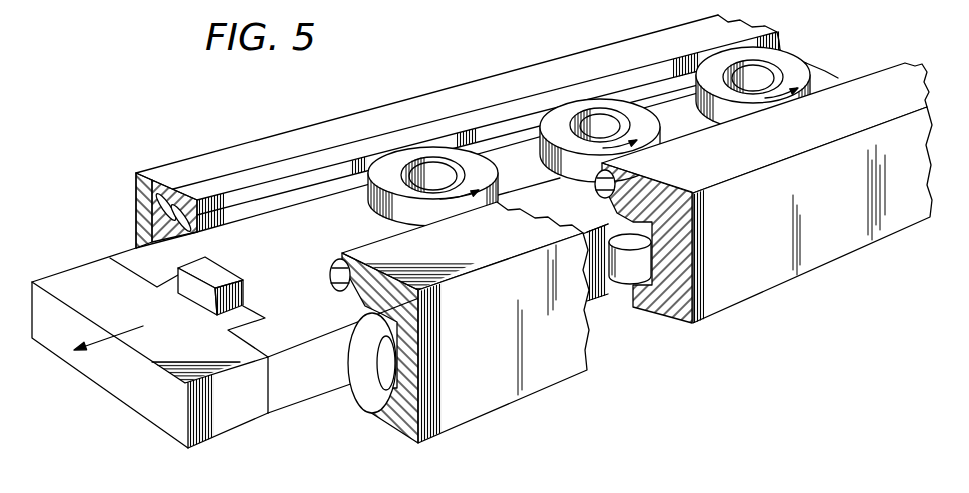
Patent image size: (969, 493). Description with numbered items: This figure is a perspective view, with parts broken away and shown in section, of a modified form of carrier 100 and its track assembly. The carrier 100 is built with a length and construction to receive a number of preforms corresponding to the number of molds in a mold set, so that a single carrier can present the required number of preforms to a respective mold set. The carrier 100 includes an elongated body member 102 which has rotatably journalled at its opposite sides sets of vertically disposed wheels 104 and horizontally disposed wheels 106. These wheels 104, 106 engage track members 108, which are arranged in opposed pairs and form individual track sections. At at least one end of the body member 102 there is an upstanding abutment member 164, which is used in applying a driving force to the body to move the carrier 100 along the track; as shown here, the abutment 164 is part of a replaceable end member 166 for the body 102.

The carrier 100 is at (303, 416).
The elongated body member 102 is at (283, 404).
The vertically disposed wheels 104 is at (352, 363).
The horizontally disposed wheels 106 is at (630, 265).
The track member 108 is at (752, 280).
The upstanding abutment member 164 is at (213, 271).
The replaceable end member 166 is at (157, 407).